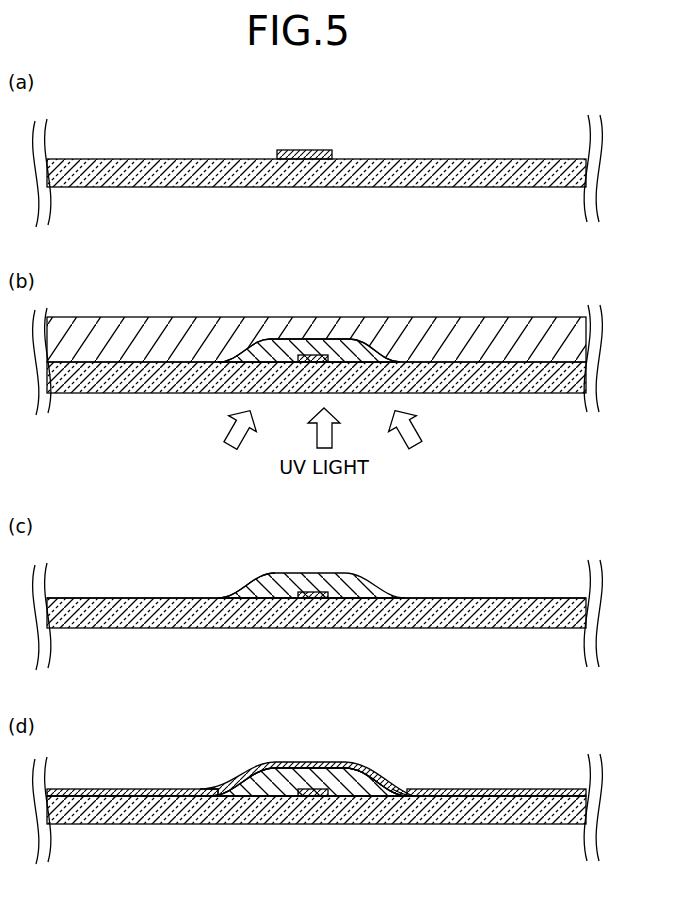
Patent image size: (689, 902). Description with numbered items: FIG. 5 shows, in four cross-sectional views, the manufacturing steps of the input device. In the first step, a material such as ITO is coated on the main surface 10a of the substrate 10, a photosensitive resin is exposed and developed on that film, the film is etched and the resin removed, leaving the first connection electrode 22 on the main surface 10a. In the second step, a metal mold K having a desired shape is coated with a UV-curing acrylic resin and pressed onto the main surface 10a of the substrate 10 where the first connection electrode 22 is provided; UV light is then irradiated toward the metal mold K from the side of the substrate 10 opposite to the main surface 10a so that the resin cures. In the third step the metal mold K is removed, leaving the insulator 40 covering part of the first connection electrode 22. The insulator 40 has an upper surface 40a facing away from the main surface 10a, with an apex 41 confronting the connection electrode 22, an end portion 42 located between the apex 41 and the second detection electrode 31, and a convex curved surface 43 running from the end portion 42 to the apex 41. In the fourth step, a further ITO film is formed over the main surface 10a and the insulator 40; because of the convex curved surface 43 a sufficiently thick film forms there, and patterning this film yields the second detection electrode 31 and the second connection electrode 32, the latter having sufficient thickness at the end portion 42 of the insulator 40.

The substrate 10 is at (440, 159).
The main surface of the substrate 10a is at (453, 360).
The first connection electrode 22 is at (312, 150).
The metal mold K is at (271, 317).
The insulator 40 is at (272, 583).
The upper surface of the insulator 40a is at (240, 782).
The apex 41 is at (315, 765).
The end portion 42 is at (413, 790).
The convex curved surface 43 is at (236, 590).
The second detection electrode 31 is at (162, 789).
The second connection electrode 32 is at (361, 763).